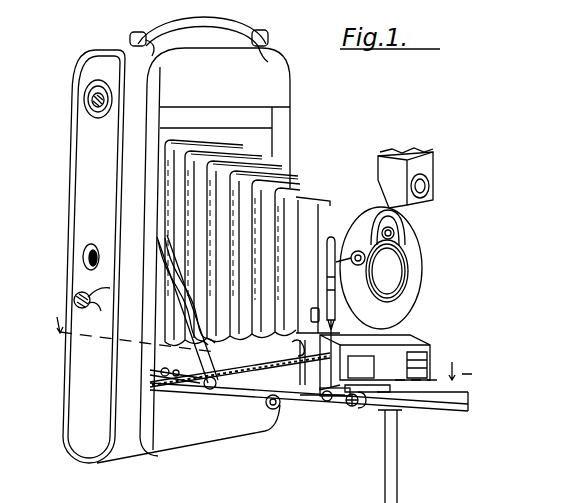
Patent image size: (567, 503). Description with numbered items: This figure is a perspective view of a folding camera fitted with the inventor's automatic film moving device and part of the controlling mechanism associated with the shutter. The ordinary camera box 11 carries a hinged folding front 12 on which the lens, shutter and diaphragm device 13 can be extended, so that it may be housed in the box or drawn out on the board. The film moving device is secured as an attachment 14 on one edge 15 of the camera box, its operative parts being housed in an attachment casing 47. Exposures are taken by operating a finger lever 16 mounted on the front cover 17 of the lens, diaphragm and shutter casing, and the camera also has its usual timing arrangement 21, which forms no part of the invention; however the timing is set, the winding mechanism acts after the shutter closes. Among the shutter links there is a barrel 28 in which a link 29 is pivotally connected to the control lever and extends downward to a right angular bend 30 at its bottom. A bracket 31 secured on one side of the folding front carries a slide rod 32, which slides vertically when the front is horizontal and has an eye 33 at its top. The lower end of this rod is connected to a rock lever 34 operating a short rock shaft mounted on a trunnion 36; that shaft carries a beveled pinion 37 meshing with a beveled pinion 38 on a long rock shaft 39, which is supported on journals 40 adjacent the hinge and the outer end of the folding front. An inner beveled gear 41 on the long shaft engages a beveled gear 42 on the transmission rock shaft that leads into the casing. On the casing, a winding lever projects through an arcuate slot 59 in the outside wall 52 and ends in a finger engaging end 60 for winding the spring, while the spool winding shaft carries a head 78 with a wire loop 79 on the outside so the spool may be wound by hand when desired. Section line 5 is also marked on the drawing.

The section line 5- 5 is at (259, 348).
The camera box 11 is at (276, 96).
The folding front 12 is at (463, 401).
The lens, shutter and diaphragm device 13 is at (408, 247).
The attachment 14 is at (62, 224).
The edge of the camera box 15 is at (143, 452).
The finger lever 16 is at (353, 211).
The front cover 17 is at (412, 267).
The timing arrangement 21 is at (408, 212).
The barrel 28 is at (327, 266).
The link 29 is at (333, 338).
The right angular bend 30 is at (361, 367).
The bracket 31 is at (310, 380).
The slide rod 32 is at (367, 384).
The eye 33 is at (315, 420).
The rock lever 34 is at (382, 403).
The trunnion 36 is at (360, 404).
The beveled pinion 37 is at (360, 410).
The beveled pinion 38 is at (338, 400).
The long rock shaft 39 is at (252, 388).
The journals 40 is at (163, 390).
The inner beveled gear 41 is at (160, 352).
The beveled gear 42 is at (160, 373).
The attachment casing 47 is at (66, 447).
The outside wall 52 is at (88, 148).
The arcuate slot 59 is at (99, 305).
The finger engaging end 60 is at (76, 297).
The head 78 is at (87, 94).
The wire loop 79 is at (94, 105).